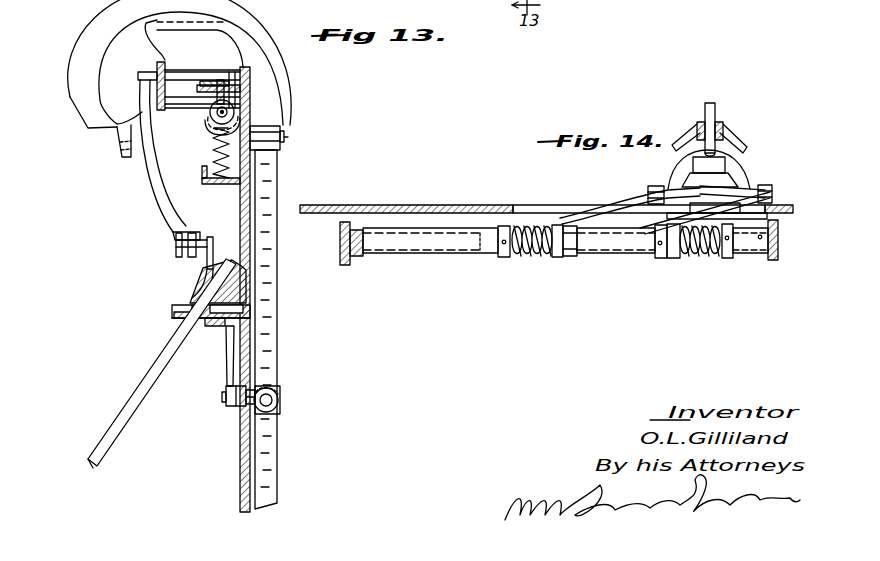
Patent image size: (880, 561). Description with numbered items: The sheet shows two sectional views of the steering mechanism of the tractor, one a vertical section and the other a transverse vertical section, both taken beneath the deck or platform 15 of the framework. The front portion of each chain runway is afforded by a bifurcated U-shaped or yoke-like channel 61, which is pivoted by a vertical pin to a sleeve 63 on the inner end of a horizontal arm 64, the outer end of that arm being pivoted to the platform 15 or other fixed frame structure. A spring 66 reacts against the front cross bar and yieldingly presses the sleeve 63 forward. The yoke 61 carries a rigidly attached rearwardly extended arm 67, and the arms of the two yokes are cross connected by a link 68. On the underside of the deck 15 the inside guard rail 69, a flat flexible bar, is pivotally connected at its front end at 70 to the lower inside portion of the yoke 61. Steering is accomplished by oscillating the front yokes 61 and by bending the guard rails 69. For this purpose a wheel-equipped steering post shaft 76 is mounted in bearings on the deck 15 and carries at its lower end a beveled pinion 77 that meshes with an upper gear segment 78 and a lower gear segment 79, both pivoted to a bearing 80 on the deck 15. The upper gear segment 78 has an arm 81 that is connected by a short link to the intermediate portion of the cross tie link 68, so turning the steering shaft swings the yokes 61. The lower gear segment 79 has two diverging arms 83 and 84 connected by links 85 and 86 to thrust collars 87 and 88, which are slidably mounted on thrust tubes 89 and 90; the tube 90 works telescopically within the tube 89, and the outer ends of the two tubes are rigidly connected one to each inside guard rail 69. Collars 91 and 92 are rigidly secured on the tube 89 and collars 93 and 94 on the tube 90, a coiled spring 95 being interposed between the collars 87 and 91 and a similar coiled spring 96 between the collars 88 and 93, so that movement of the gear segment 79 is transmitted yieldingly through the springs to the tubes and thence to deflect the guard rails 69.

In FIG. 13, the platform 15 is at (241, 458).
In FIG. 14, the platform 15 is at (433, 198).
In FIG. 13, the yoke-like channel 61 is at (83, 105).
In FIG. 13, the sleeve 63 is at (196, 72).
In FIG. 13, the horizontal arm 64 is at (228, 78).
In FIG. 13, the spring 66 is at (212, 150).
In FIG. 13, the rearwardly extended arm 67 is at (155, 192).
In FIG. 13, the link 68 is at (176, 247).
In FIG. 13, the inside guard rail 69 is at (273, 453).
In FIG. 14, the inside guard rail 69 is at (342, 242).
In FIG. 13, the pivotal connection 70 is at (290, 137).
In FIG. 13, the steering post shaft 76 is at (127, 420).
In FIG. 14, the steering post shaft 76 is at (714, 108).
In FIG. 13, the beveled pinion 77 is at (218, 272).
In FIG. 13, the upper gear segment 78 is at (203, 290).
In FIG. 14, the upper gear segment 78 is at (733, 138).
In FIG. 13, the lower gear segment 79 is at (240, 297).
In FIG. 13, the bearing 80 is at (213, 320).
In FIG. 14, the bearing 80 is at (712, 161).
In FIG. 13, the arm 81 is at (209, 242).
In FIG. 13, the diverging arm 83 is at (231, 372).
In FIG. 14, the diverging arm 83 is at (672, 186).
In FIG. 14, the diverging arm 84 is at (740, 185).
In FIG. 13, the link 85 is at (228, 402).
In FIG. 14, the link 85 is at (612, 203).
In FIG. 14, the link 86 is at (730, 200).
In FIG. 13, the thrust collar 87 is at (278, 413).
In FIG. 14, the thrust collar 87 is at (560, 259).
In FIG. 14, the thrust collar 88 is at (675, 259).
In FIG. 14, the thrust tube 89 is at (463, 247).
In FIG. 13, the thrust tube 90 is at (280, 400).
In FIG. 14, the thrust tube 90 is at (628, 246).
In FIG. 14, the collar 91 is at (503, 259).
In FIG. 14, the collar 92 is at (573, 257).
In FIG. 14, the collar 93 is at (726, 259).
In FIG. 14, the collar 94 is at (662, 259).
In FIG. 14, the coiled spring 95 is at (533, 258).
In FIG. 14, the coiled spring 96 is at (703, 258).